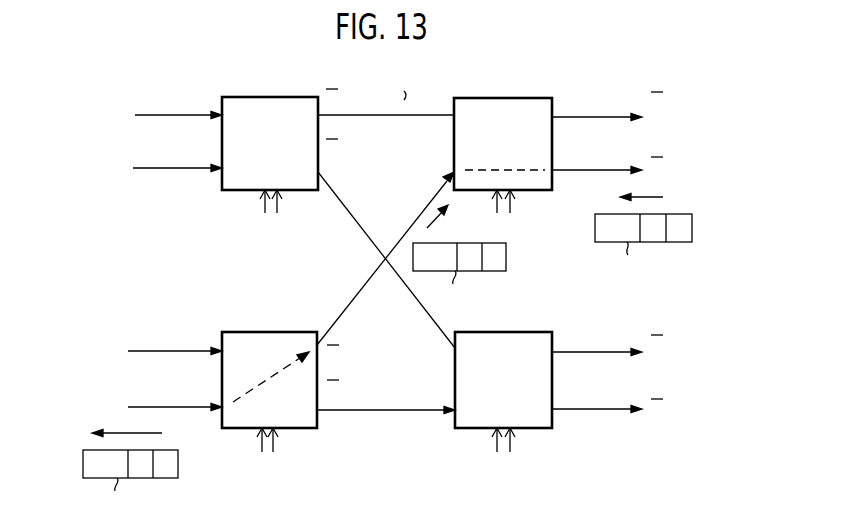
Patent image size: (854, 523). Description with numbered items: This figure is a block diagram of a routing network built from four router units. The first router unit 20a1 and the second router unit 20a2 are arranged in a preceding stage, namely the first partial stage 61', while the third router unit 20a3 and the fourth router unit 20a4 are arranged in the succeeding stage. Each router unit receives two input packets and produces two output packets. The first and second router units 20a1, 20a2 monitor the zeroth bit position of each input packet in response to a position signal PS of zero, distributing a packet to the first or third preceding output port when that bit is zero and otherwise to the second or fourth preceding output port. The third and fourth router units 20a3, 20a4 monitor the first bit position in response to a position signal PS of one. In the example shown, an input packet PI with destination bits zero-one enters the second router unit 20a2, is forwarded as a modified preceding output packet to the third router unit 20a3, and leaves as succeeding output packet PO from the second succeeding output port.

The first router unit 20a1 is at (297, 97).
The second router unit 20a2 is at (273, 332).
The third router unit 20a3 is at (523, 98).
The fourth router unit 20a4 is at (503, 332).
The first partial stage 61' is at (387, 283).